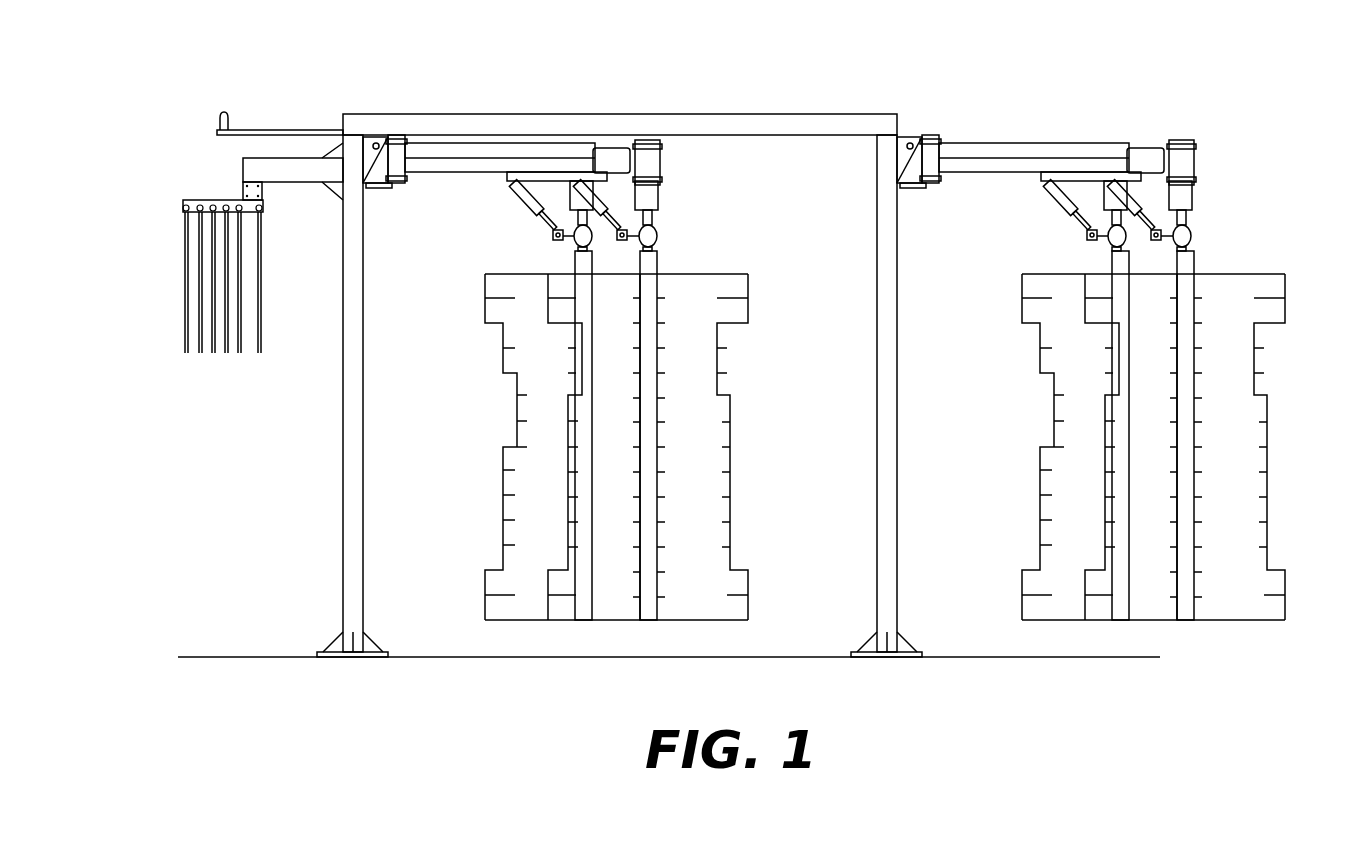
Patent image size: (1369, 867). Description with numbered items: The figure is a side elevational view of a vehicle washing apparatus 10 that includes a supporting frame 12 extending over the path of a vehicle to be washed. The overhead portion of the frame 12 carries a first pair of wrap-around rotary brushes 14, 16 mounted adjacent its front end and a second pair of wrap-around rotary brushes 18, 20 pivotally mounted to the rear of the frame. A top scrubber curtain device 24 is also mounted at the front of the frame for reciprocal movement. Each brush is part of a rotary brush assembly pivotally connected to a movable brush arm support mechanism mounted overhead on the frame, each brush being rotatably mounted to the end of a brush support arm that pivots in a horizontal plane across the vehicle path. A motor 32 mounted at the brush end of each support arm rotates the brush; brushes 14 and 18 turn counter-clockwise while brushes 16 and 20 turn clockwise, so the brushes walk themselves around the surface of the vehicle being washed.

The vehicle washing apparatus 10 is at (876, 95).
The supporting frame 12 is at (405, 114).
The wrap-around rotary brush 14 is at (515, 436).
The wrap-around rotary brush 16 is at (730, 413).
The wrap-around rotary brush 18 is at (1052, 412).
The wrap-around rotary brush 20 is at (1255, 380).
The top scrubber curtain device 24 is at (183, 232).
The motor 32 is at (597, 145).